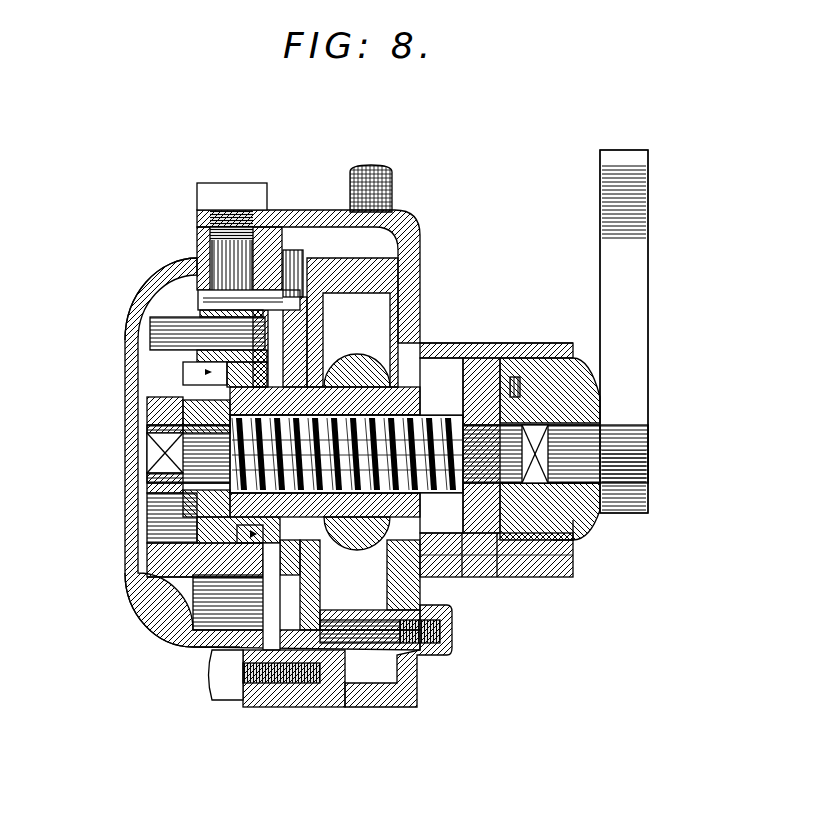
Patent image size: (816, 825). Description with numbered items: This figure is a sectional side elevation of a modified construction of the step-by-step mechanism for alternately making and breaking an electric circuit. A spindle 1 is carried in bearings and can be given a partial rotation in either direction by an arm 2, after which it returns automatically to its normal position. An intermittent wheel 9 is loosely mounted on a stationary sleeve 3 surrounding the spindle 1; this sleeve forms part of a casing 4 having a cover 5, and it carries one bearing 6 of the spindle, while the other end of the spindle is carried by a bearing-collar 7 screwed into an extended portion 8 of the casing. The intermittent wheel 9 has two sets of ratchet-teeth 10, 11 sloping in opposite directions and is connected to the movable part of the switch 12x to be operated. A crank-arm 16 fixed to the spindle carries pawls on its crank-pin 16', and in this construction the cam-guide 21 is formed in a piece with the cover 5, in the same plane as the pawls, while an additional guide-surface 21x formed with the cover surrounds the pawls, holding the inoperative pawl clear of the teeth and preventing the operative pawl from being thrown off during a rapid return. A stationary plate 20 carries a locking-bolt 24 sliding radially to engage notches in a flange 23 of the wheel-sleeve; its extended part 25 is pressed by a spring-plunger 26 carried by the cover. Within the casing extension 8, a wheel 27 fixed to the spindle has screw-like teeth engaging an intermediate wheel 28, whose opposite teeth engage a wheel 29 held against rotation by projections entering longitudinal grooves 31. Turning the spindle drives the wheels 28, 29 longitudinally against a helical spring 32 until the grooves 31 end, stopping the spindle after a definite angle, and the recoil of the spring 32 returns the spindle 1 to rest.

The spindle 1 is at (182, 445).
The arm 2 is at (624, 331).
The stationary sleeve 3 is at (180, 402).
The casing 4 is at (362, 698).
The cover 5 is at (128, 533).
The bearing 6 is at (180, 491).
The bearing-collar 7 is at (573, 528).
The extended portion of the casing 8 is at (523, 350).
The intermittent wheel 9 is at (352, 557).
The ratchet-teeth 10 is at (205, 372).
The ratchet-teeth 11 is at (140, 580).
The movable part of the switch 12x is at (378, 352).
The crank-arm 16 is at (201, 305).
The crank-pin 16' is at (175, 337).
The stationary plate 20 is at (298, 262).
The cam-guide 21 is at (197, 572).
The guide-surface 21x is at (190, 648).
The flange 23 is at (278, 560).
The locking-bolt 24 is at (290, 325).
The extended part 25 is at (207, 297).
The spring-plunger 26 is at (208, 264).
The wheel 27 is at (528, 557).
The intermediate wheel 28 is at (498, 540).
The wheel 29 is at (462, 548).
The longitudinal grooves 31 is at (452, 350).
The helical spring 32 is at (178, 428).